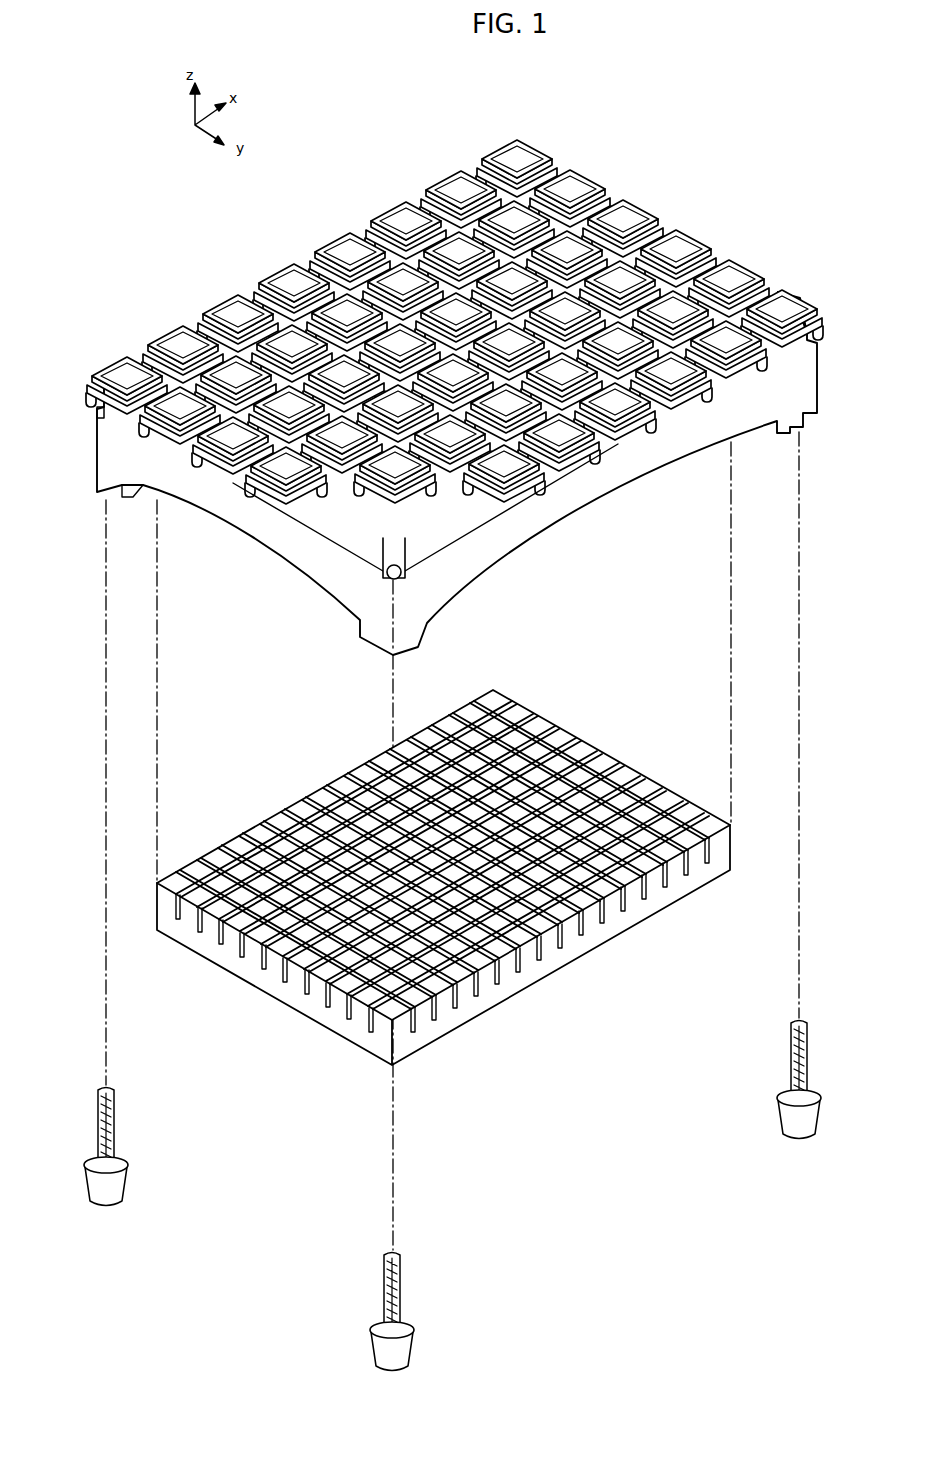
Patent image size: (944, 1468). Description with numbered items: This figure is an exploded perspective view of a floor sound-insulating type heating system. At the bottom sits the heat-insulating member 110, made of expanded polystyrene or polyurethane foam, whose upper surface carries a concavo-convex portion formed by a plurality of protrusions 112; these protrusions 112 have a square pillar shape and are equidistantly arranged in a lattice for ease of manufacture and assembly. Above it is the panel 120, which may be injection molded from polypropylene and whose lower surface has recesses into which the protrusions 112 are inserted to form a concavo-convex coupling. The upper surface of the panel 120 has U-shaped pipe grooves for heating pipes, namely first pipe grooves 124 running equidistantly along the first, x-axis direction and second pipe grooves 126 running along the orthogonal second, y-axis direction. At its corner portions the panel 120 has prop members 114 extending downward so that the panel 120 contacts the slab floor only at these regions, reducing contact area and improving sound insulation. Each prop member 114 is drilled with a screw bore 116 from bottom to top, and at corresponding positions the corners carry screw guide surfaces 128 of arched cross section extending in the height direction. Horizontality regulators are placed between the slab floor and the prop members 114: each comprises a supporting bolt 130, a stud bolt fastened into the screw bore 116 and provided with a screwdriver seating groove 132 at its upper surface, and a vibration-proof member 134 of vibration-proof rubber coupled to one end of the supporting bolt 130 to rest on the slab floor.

The heat-insulating member 110 is at (321, 769).
The protrusions 112 is at (275, 814).
The prop members 114 is at (100, 463).
The screw bore 116 is at (99, 409).
The panel 120 is at (187, 307).
The first pipe grooves 124 is at (233, 483).
The second pipe grooves 126 is at (618, 444).
The screw guide surfaces 128 is at (378, 560).
The supporting bolt 130 is at (98, 1132).
The screwdriver seating groove 132 is at (115, 1098).
The vibration-proof member 134 is at (122, 1192).